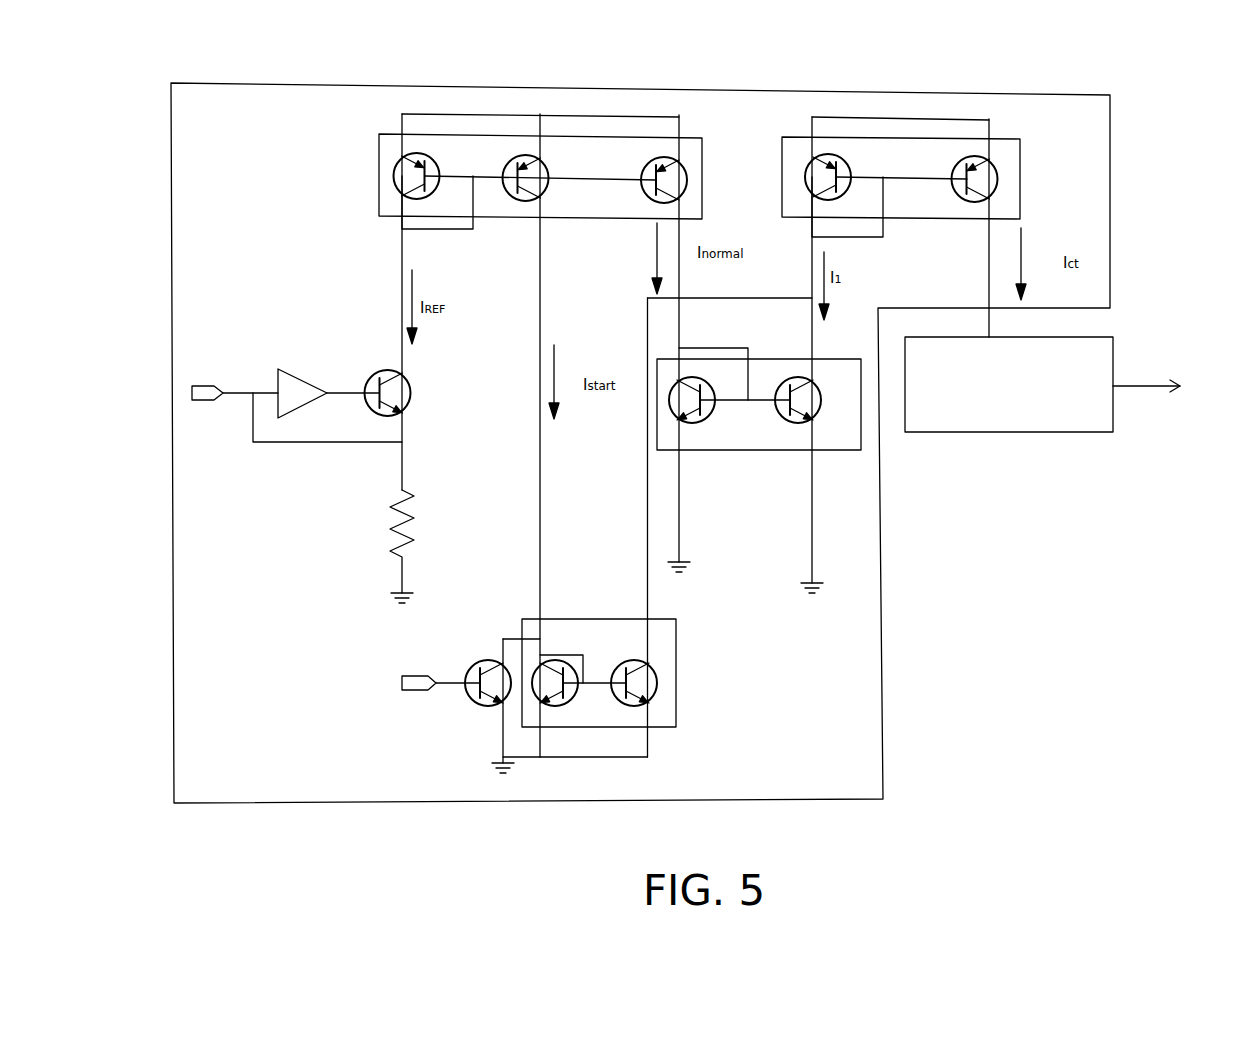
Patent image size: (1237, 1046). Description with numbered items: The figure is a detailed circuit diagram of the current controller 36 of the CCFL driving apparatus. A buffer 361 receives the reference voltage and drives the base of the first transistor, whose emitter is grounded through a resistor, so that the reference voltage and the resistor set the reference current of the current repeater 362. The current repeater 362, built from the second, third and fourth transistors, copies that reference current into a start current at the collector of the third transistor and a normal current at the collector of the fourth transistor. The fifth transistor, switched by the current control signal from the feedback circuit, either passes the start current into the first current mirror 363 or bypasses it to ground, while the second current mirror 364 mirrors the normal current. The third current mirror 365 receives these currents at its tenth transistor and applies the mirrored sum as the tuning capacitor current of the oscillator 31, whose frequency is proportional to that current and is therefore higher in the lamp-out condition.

The current controller 36 is at (850, 91).
The oscillator 31 is at (1007, 432).
The buffer 361 is at (305, 378).
The current repeater 362 is at (378, 170).
The first current mirror 363 is at (677, 672).
The second current mirror 364 is at (773, 452).
The third current mirror 365 is at (1020, 184).